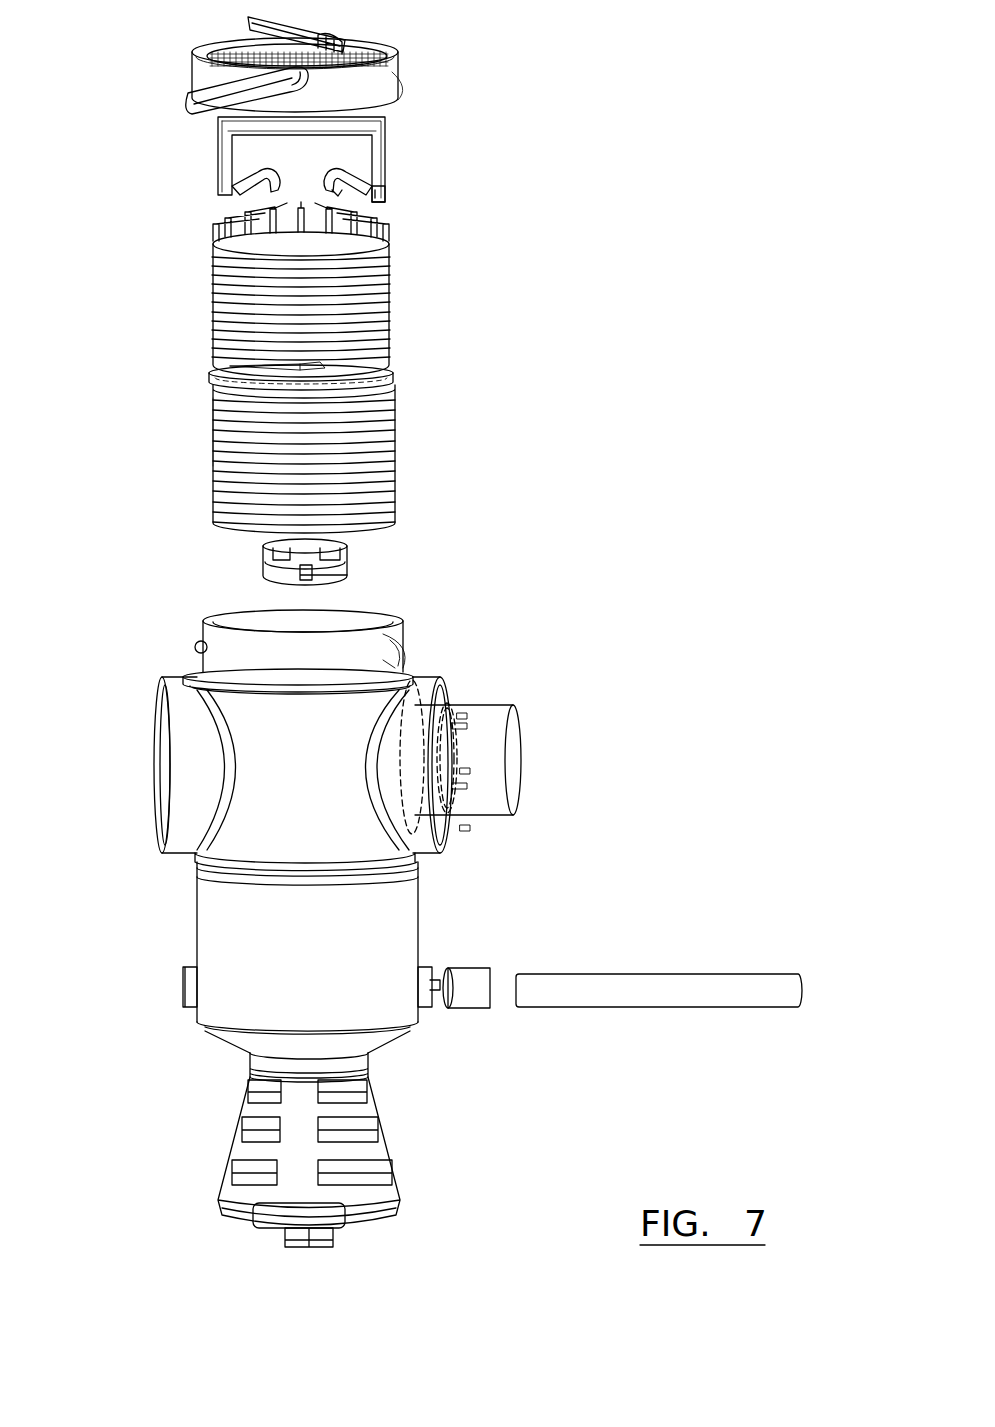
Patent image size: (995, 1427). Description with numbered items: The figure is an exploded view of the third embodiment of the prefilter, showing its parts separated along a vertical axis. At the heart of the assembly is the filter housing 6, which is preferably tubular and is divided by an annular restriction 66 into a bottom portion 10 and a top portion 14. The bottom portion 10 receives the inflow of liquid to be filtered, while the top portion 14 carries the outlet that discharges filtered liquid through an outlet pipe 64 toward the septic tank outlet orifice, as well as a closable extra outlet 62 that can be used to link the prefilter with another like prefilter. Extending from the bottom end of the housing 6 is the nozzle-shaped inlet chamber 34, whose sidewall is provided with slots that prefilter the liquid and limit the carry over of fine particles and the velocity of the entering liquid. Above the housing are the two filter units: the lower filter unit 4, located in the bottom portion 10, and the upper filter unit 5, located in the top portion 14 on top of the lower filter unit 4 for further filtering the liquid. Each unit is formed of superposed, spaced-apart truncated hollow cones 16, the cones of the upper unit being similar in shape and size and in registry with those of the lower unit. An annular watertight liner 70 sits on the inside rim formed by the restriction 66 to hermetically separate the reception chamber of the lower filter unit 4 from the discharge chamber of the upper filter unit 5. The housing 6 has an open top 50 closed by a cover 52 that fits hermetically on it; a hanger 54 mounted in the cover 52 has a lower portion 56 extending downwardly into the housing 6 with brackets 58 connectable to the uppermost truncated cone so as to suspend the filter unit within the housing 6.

The lower filter unit 4 is at (395, 442).
The upper filter unit 5 is at (391, 303).
The filter housing 6 is at (302, 752).
The bottom portion 10 is at (294, 960).
The top portion 14 is at (183, 778).
The truncated hollow cones 16 is at (213, 462).
The inlet chamber 34 is at (304, 1147).
The open top 50 is at (395, 632).
The cover 52 is at (378, 77).
The hanger 54 is at (375, 188).
The lower portion 56 is at (385, 196).
The brackets 58 is at (340, 196).
The closable extra outlet 62 is at (115, 746).
The outlet pipe 64 is at (495, 712).
The annular restriction 66 is at (418, 868).
The annular watertight liner 70 is at (395, 372).